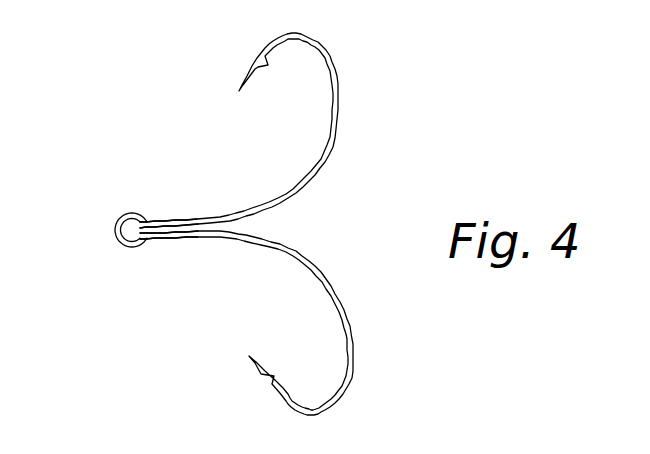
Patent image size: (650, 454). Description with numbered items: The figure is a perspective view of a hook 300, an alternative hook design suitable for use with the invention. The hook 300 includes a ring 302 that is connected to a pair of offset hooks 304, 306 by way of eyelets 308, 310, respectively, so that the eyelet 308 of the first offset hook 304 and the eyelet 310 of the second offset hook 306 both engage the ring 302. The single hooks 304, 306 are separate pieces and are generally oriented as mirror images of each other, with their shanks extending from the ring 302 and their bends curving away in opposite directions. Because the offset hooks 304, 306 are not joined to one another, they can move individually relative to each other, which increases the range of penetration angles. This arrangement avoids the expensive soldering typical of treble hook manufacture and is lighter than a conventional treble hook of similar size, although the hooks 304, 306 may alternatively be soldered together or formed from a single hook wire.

The hook 300 is at (195, 235).
The ring 302 is at (117, 220).
The offset hook 304 is at (233, 212).
The offset hook 306 is at (237, 236).
The eyelet 308 is at (151, 219).
The eyelet 310 is at (152, 237).